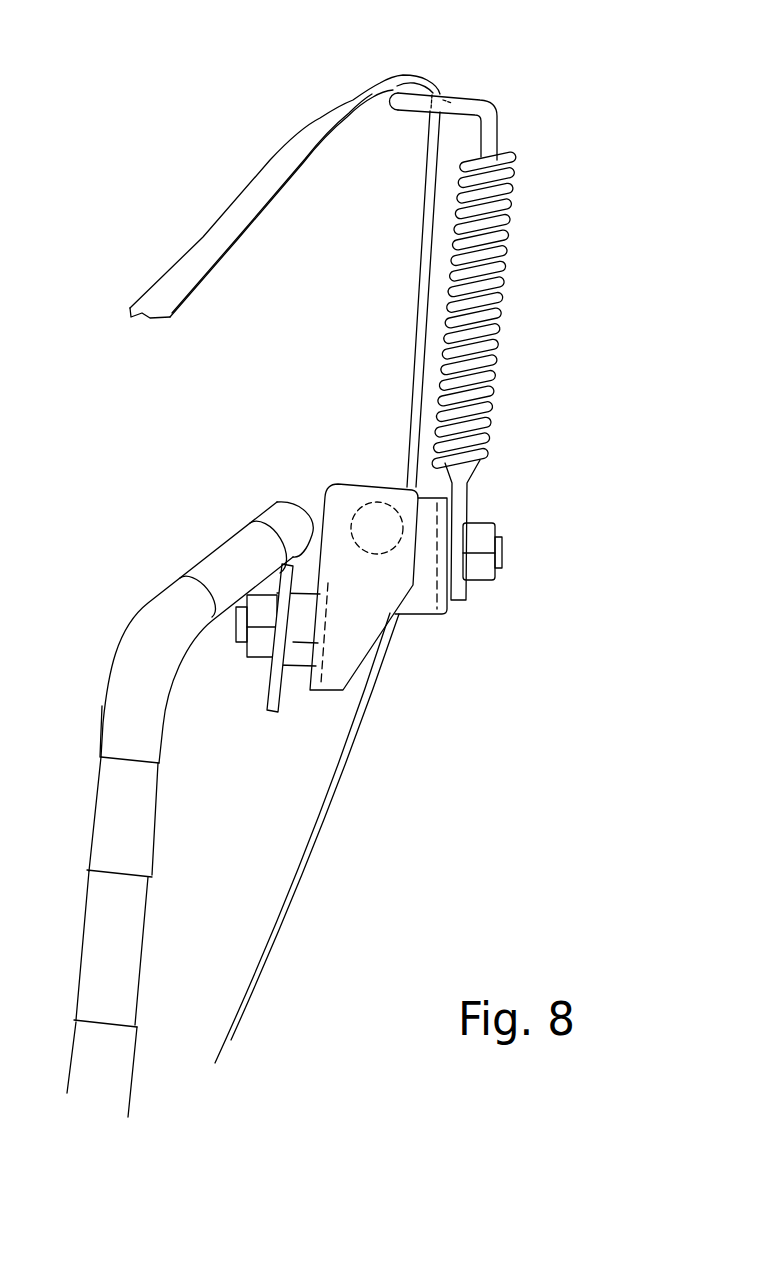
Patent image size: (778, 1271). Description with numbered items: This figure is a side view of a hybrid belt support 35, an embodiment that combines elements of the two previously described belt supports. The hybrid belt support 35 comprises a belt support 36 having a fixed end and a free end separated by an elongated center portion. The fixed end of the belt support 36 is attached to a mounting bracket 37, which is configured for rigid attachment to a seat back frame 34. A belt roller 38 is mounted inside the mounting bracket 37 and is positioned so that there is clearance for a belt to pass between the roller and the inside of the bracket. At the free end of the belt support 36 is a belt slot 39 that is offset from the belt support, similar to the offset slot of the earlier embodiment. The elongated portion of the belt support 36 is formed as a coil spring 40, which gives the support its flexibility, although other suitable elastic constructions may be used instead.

The seat back frame 34 is at (130, 640).
The hybrid belt support 35 is at (610, 238).
The belt support 36 is at (502, 133).
The mounting bracket 37 is at (380, 620).
The belt roller 38 is at (357, 528).
The belt slot 39 is at (463, 96).
The coil spring 40 is at (487, 331).